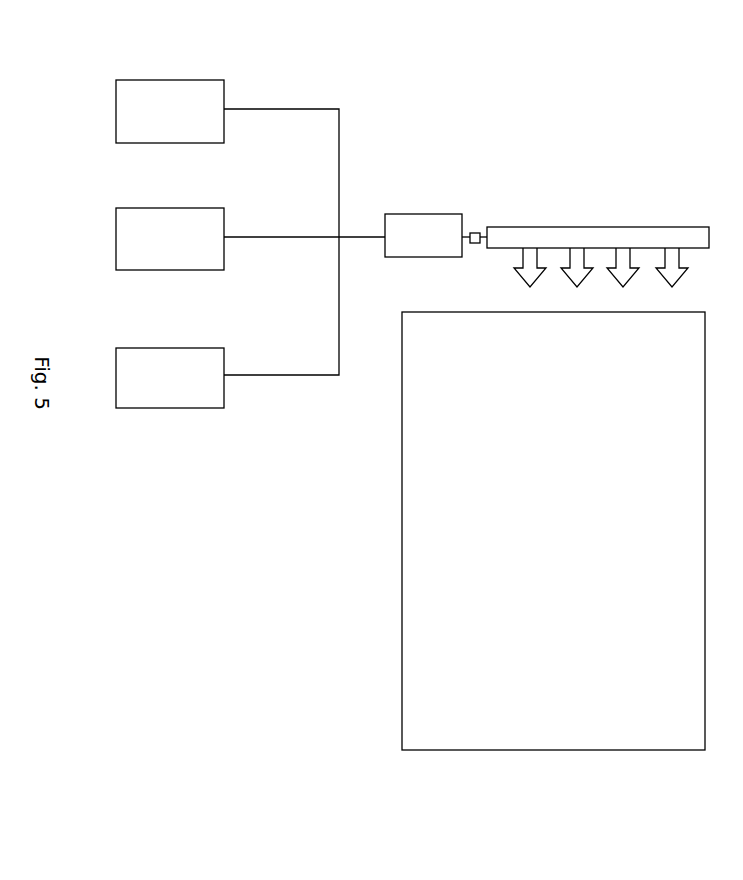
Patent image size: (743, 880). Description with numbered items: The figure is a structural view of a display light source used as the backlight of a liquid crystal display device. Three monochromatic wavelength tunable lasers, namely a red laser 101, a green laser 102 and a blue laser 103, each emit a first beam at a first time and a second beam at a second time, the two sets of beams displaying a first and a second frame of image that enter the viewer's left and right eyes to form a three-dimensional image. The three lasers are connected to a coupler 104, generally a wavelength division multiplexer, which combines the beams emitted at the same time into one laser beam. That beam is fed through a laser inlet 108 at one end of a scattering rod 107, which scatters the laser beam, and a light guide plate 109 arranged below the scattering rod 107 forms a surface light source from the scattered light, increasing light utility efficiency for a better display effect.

The red laser 101 is at (183, 91).
The green laser 102 is at (181, 223).
The blue laser 103 is at (168, 362).
The coupler 104 is at (442, 223).
The scattering rod 107 is at (600, 238).
The laser inlet 108 is at (478, 232).
The light guide plate 109 is at (445, 637).